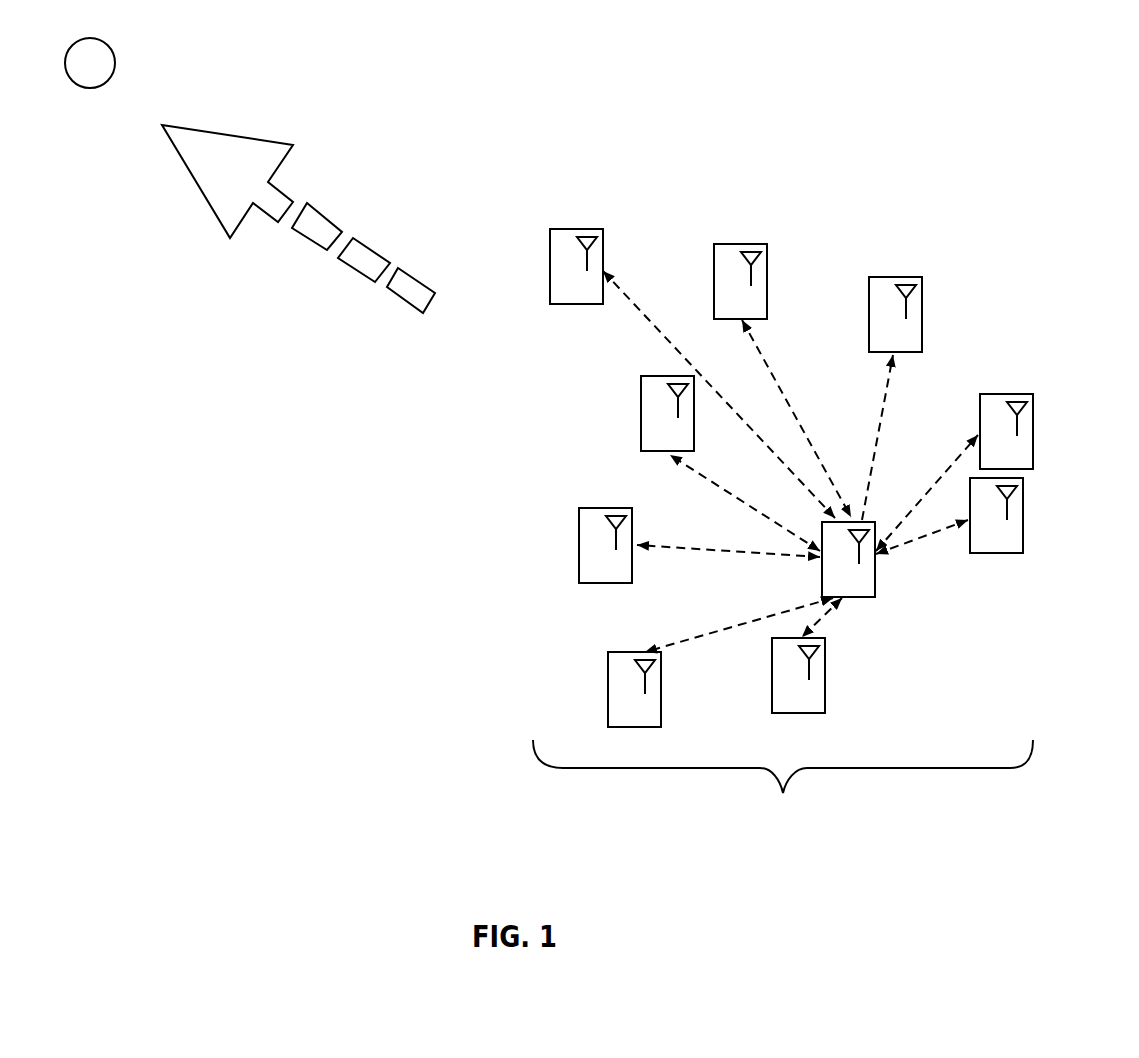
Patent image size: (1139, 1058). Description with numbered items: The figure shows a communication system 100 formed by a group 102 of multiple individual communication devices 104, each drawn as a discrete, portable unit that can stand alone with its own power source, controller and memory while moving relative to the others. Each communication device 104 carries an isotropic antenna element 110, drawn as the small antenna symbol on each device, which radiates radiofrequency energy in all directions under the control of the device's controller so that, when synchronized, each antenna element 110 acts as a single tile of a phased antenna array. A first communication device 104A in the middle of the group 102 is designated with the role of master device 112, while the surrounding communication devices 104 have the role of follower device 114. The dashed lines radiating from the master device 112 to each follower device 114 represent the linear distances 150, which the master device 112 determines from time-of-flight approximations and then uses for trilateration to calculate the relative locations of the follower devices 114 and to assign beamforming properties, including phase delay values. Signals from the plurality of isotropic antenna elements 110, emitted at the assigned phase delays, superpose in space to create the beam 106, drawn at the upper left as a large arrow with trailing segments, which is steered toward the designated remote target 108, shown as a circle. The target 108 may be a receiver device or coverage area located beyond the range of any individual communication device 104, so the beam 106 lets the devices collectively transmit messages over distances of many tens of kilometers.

The communication system 100 is at (1058, 187).
The group 102 is at (757, 495).
The communication device 104 is at (588, 367).
The first communication device 104A is at (877, 568).
The beam 106 is at (318, 213).
The remote target 108 is at (115, 63).
The isotropic antenna element 110 is at (593, 246).
The master device 112 is at (852, 583).
The follower device 114 is at (550, 268).
The linear distance 150 is at (772, 373).